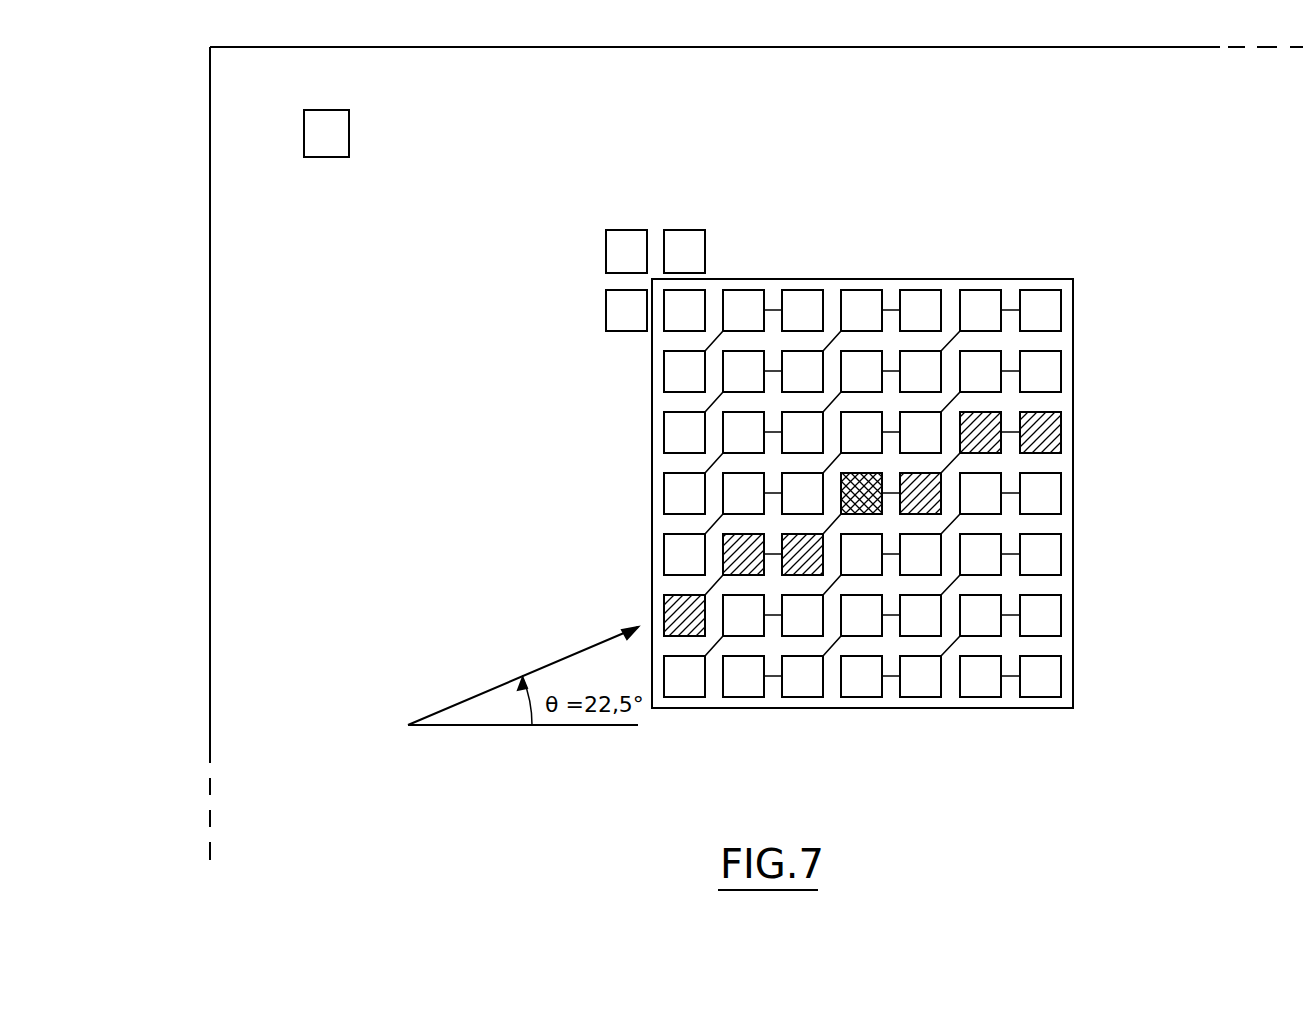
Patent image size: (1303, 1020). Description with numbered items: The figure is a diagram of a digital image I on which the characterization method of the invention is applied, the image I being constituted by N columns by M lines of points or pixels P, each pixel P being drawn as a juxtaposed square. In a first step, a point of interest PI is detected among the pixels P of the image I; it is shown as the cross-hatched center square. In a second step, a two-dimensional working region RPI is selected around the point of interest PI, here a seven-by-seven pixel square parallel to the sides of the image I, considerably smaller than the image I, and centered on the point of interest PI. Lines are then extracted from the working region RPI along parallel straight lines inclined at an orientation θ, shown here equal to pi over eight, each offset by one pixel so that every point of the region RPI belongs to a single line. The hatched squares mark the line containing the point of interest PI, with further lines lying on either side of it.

The digital image I is at (245, 532).
The pixel P is at (330, 148).
The working region RPI is at (975, 278).
The point of interest PI is at (878, 518).